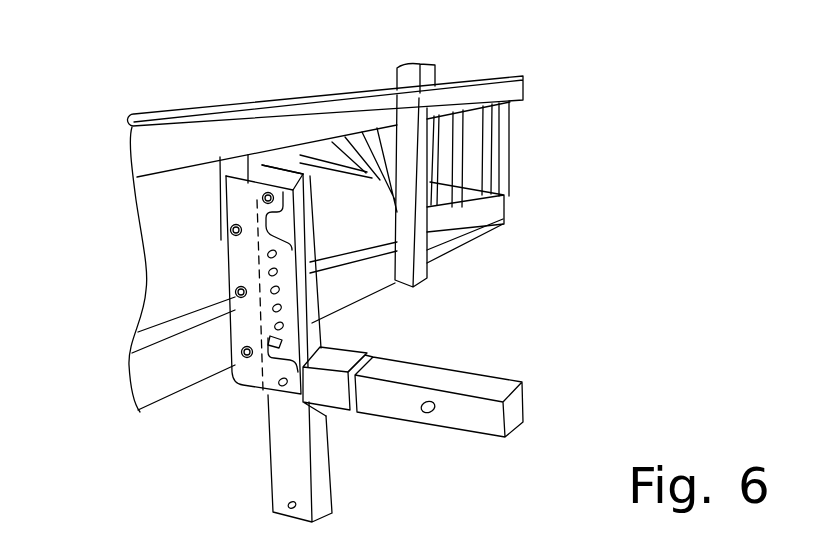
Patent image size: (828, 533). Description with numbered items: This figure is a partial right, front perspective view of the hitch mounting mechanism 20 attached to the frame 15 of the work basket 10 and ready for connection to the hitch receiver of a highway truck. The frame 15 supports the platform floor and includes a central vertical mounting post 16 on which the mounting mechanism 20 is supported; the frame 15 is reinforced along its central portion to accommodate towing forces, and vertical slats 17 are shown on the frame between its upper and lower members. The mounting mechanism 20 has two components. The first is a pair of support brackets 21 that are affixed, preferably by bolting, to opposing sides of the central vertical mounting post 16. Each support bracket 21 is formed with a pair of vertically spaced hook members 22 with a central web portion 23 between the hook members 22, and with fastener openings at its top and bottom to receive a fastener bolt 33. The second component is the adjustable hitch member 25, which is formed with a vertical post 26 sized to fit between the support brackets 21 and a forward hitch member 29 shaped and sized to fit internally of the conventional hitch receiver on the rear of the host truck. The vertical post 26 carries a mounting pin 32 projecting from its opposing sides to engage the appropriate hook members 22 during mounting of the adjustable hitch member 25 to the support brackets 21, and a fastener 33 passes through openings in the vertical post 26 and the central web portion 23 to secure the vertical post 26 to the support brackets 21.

The work basket 10 is at (550, 52).
The frame 15 is at (503, 227).
The central vertical mounting post 16 is at (257, 158).
The slats 17 is at (420, 145).
The mounting mechanism 20 is at (565, 197).
The support bracket 21 is at (240, 277).
The hook members 22 is at (268, 198).
The central web portion 23 is at (270, 262).
The adjustable hitch member 25 is at (359, 441).
The vertical post 26 is at (283, 428).
The forward hitch member 29 is at (487, 384).
The mounting pin 32 is at (236, 335).
The fastener bolt 33 is at (258, 195).